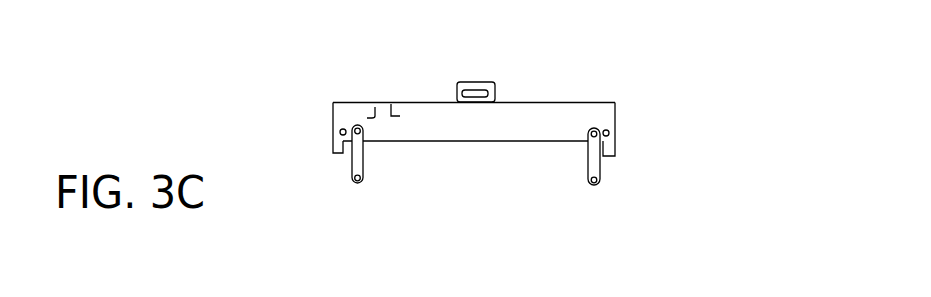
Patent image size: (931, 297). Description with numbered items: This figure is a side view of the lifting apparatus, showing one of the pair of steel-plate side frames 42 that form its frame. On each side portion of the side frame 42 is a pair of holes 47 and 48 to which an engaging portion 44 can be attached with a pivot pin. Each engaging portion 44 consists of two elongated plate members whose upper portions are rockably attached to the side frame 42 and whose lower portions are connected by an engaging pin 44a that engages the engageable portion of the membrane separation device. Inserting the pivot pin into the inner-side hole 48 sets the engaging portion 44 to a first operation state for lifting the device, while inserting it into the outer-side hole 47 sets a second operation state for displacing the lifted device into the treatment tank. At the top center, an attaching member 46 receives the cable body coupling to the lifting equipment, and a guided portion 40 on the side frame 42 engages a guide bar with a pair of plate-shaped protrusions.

The guided portion 40 is at (390, 112).
The side frame 42 is at (538, 115).
The engaging portion 44 is at (365, 165).
The engaging pin 44a is at (355, 185).
The attaching member 46 is at (478, 82).
The outer-side hole 47 is at (330, 130).
The inner-side hole 48 is at (358, 127).